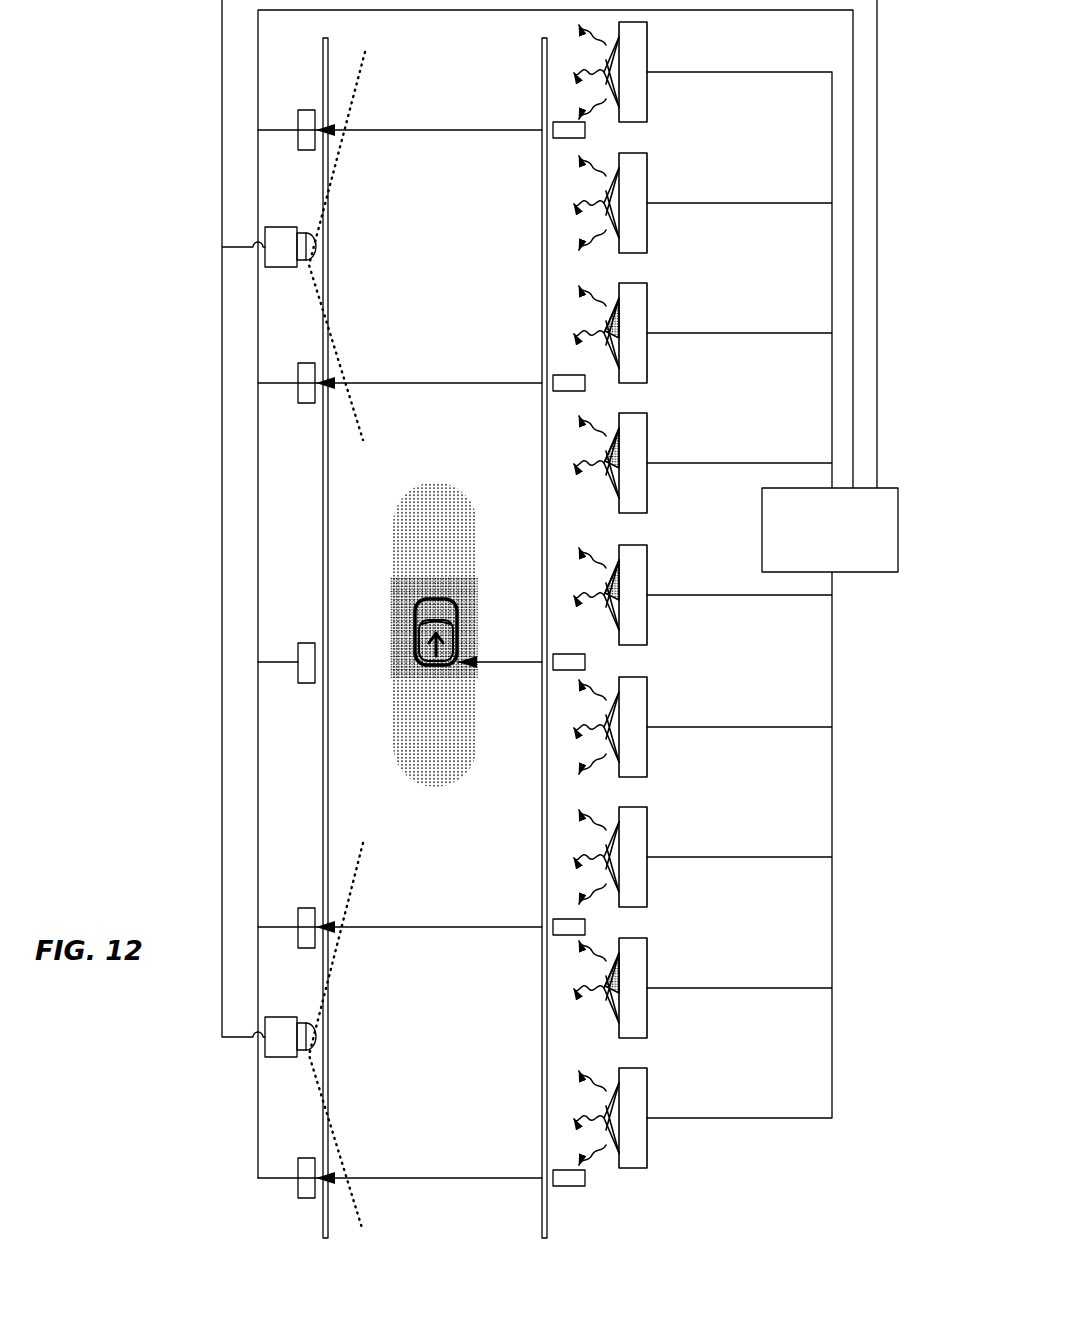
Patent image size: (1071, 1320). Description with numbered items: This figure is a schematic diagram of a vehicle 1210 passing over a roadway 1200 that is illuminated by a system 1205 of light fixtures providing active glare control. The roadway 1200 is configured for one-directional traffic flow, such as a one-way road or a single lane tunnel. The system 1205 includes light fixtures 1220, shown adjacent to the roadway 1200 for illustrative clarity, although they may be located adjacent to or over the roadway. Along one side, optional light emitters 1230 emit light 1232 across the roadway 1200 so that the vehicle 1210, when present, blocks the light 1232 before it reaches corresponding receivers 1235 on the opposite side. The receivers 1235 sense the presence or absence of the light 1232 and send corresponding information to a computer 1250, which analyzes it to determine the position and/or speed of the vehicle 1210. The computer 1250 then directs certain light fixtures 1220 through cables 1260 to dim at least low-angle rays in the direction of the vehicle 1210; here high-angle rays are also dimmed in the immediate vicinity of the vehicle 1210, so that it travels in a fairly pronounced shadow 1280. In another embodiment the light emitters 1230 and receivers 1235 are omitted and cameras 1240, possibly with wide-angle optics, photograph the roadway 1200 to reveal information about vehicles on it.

The system 1205 is at (151, 67).
The roadway 1200 is at (455, 259).
The vehicle 1210 is at (412, 636).
The light fixtures 1220 is at (647, 228).
The light emitters 1230 is at (585, 130).
The light 1232 is at (430, 130).
The receivers 1235 is at (305, 110).
The cameras 1240 is at (290, 227).
The computer 1250 is at (809, 554).
The cables 1260 is at (828, 142).
The shadow 1280 is at (398, 592).